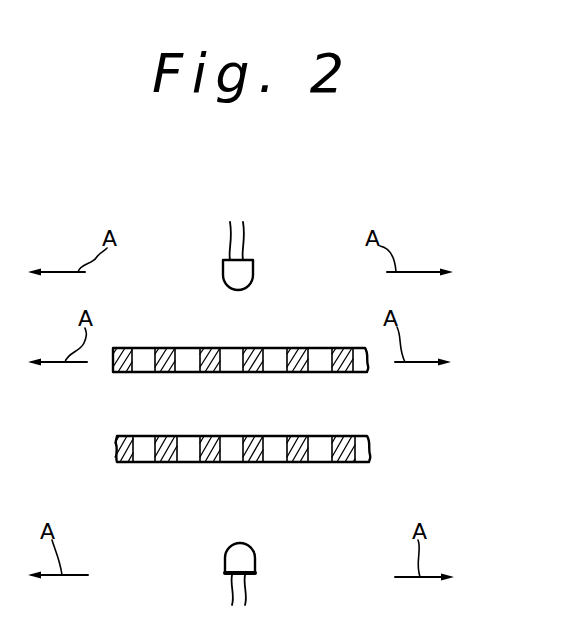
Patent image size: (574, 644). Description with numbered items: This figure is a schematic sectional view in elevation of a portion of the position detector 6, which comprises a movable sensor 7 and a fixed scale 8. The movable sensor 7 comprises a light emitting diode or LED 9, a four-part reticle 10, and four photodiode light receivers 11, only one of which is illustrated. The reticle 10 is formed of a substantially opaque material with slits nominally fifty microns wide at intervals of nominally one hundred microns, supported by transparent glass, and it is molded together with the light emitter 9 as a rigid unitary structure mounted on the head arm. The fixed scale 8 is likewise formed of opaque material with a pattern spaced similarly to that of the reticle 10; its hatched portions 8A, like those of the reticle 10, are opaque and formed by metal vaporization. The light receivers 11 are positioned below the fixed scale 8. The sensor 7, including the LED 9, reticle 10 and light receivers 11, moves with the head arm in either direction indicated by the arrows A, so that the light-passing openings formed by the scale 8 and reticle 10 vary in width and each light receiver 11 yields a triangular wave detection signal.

The position detector 6 is at (469, 291).
The movable sensor 7 is at (471, 240).
The fixed scale 8 is at (356, 438).
The marker segment of detection track 8A is at (137, 436).
The light emitting diode 9 is at (253, 270).
The four-part reticle 10 is at (118, 372).
The photodiode light receivers 11 is at (255, 560).